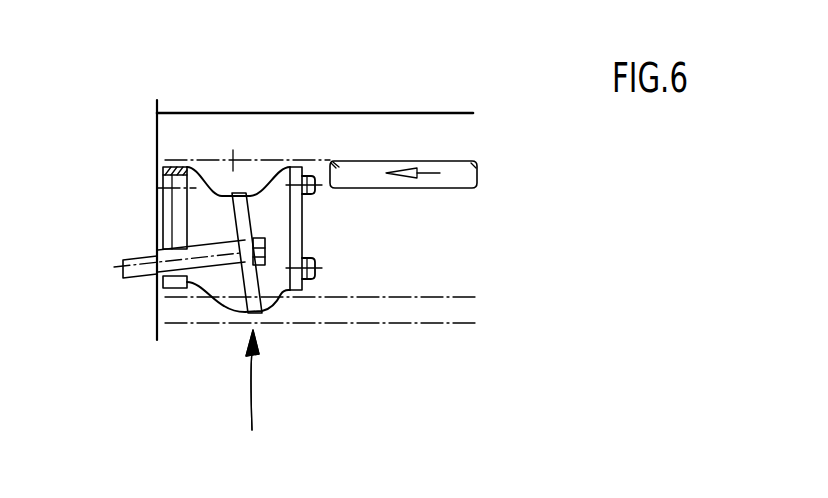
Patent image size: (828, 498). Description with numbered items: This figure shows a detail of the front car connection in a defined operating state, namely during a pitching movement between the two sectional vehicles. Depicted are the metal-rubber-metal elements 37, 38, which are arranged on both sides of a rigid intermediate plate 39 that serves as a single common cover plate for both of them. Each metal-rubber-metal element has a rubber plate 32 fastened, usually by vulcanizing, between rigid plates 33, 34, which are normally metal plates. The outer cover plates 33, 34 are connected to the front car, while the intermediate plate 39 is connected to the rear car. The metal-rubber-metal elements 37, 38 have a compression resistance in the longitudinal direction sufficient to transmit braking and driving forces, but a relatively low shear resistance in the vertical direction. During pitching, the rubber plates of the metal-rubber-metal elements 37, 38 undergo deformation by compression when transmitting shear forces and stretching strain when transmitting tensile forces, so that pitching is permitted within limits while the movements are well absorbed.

The rubber plate 32 is at (277, 215).
The rigid plate 33 is at (313, 168).
The rigid plate 34 is at (180, 203).
The metal-rubber-metal element 37 is at (282, 397).
The metal-rubber-metal element 38 is at (282, 397).
The intermediate plate 39 is at (238, 213).